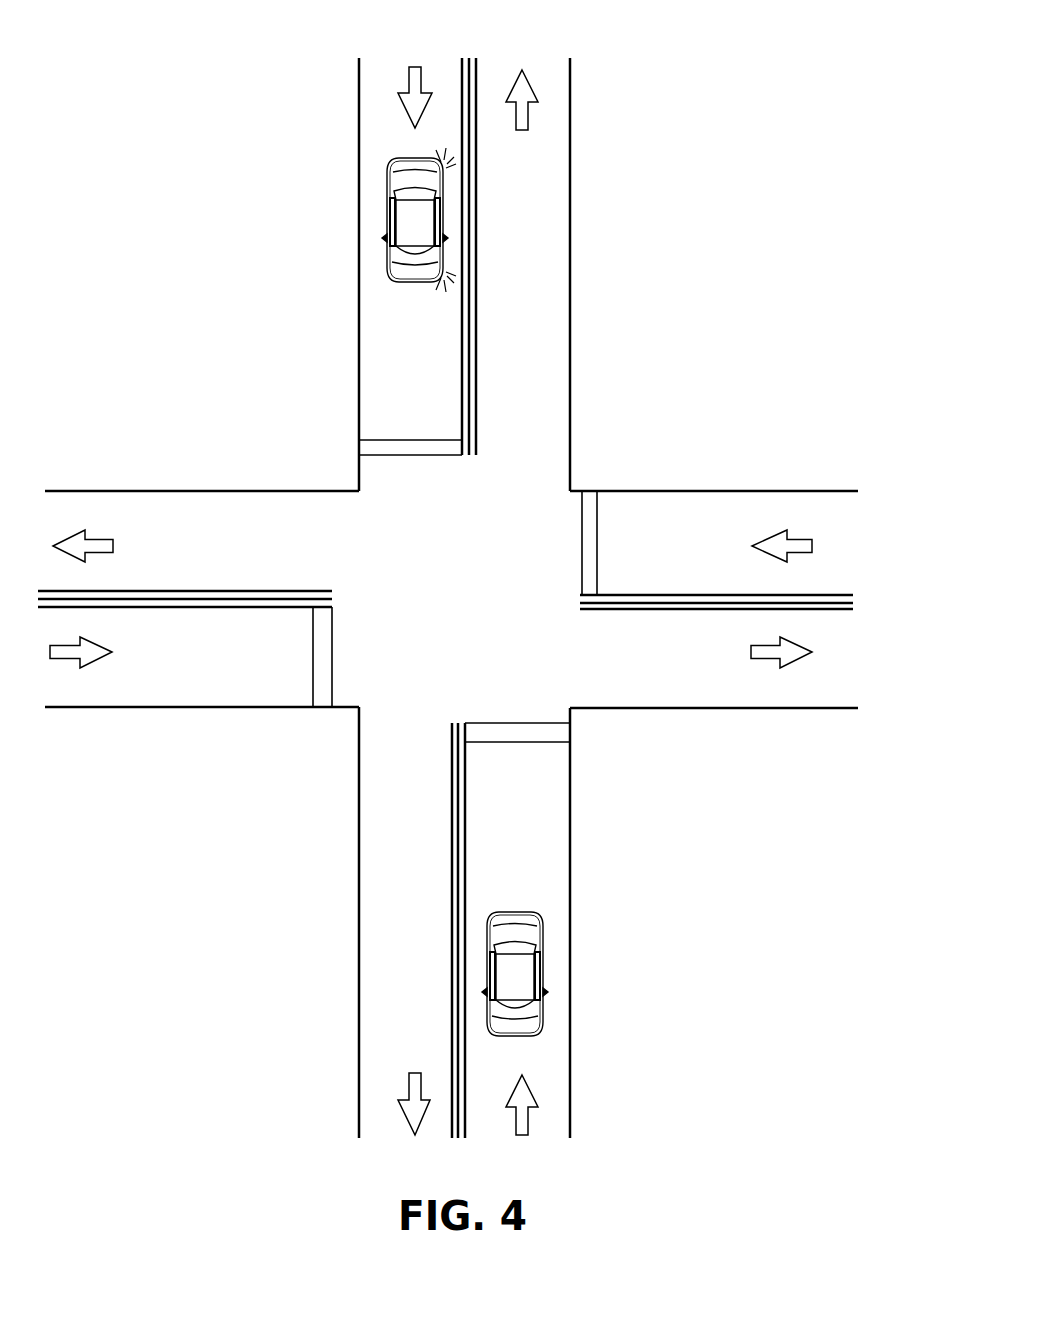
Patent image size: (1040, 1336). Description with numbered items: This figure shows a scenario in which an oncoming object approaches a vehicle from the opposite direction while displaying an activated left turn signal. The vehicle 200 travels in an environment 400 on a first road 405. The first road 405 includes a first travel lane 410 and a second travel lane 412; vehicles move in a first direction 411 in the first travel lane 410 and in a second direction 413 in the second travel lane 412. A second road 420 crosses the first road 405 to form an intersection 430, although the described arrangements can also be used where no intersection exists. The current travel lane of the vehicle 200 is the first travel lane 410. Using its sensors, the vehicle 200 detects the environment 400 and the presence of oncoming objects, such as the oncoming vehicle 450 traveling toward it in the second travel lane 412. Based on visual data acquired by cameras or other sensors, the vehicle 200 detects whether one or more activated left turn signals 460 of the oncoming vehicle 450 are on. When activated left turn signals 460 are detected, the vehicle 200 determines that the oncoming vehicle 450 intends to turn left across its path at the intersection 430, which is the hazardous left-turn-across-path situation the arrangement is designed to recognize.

The environment 400 is at (785, 94).
The vehicle 200 is at (543, 978).
The first road 405 is at (571, 872).
The first travel lane 410 is at (526, 851).
The first direction 411 is at (527, 1123).
The second travel lane 412 is at (414, 851).
The second direction 413 is at (402, 1092).
The second road 420 is at (648, 488).
The intersection 430 is at (302, 463).
The oncoming vehicle 450 is at (387, 208).
The activated left turn signals 460 is at (447, 145).